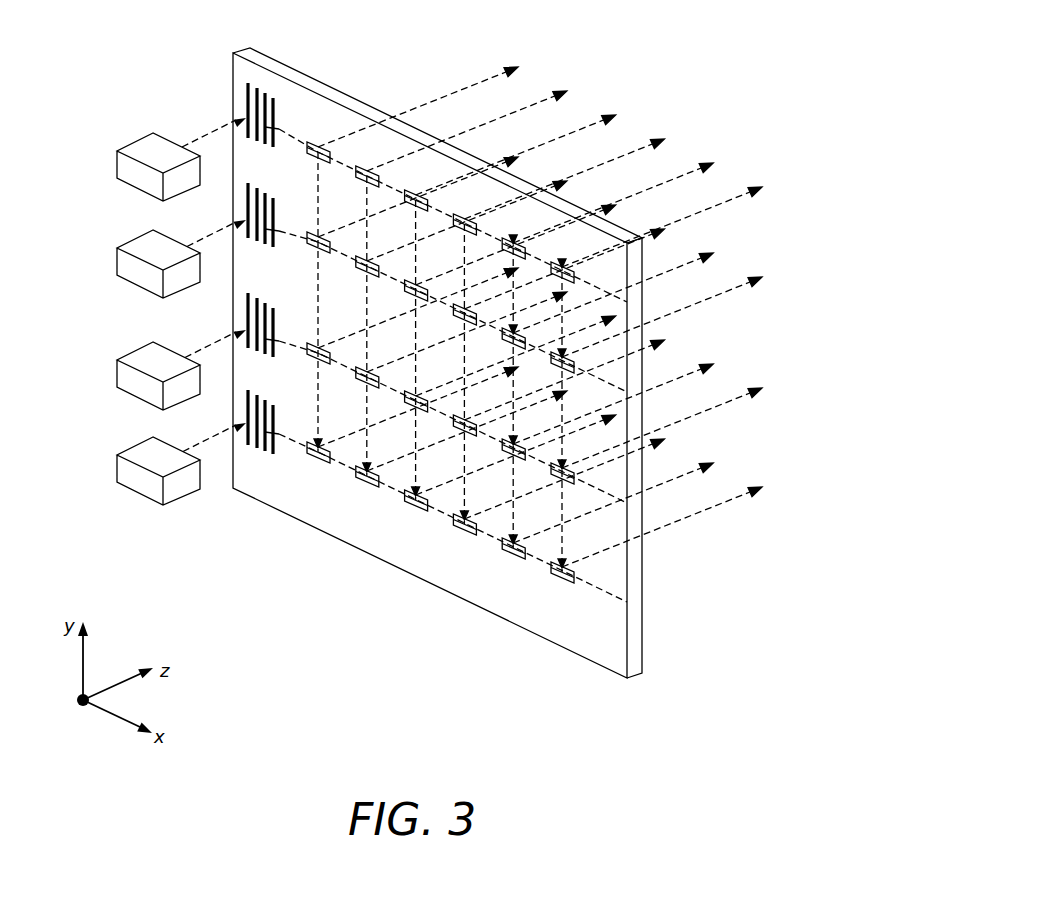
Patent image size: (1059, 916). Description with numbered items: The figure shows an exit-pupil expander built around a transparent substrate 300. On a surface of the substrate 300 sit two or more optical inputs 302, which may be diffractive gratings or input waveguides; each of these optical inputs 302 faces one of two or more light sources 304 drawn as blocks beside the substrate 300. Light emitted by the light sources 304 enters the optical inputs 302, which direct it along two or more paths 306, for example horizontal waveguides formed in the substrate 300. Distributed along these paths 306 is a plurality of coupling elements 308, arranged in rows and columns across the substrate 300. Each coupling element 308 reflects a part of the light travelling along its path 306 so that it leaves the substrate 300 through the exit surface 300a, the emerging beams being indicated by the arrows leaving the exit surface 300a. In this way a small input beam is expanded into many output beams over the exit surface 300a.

The transparent substrate 300 is at (480, 607).
The exit surface 300a is at (643, 638).
The optical inputs 302 is at (247, 103).
The light sources 304 is at (103, 243).
The paths 306 is at (289, 138).
The coupling elements 308 is at (318, 145).